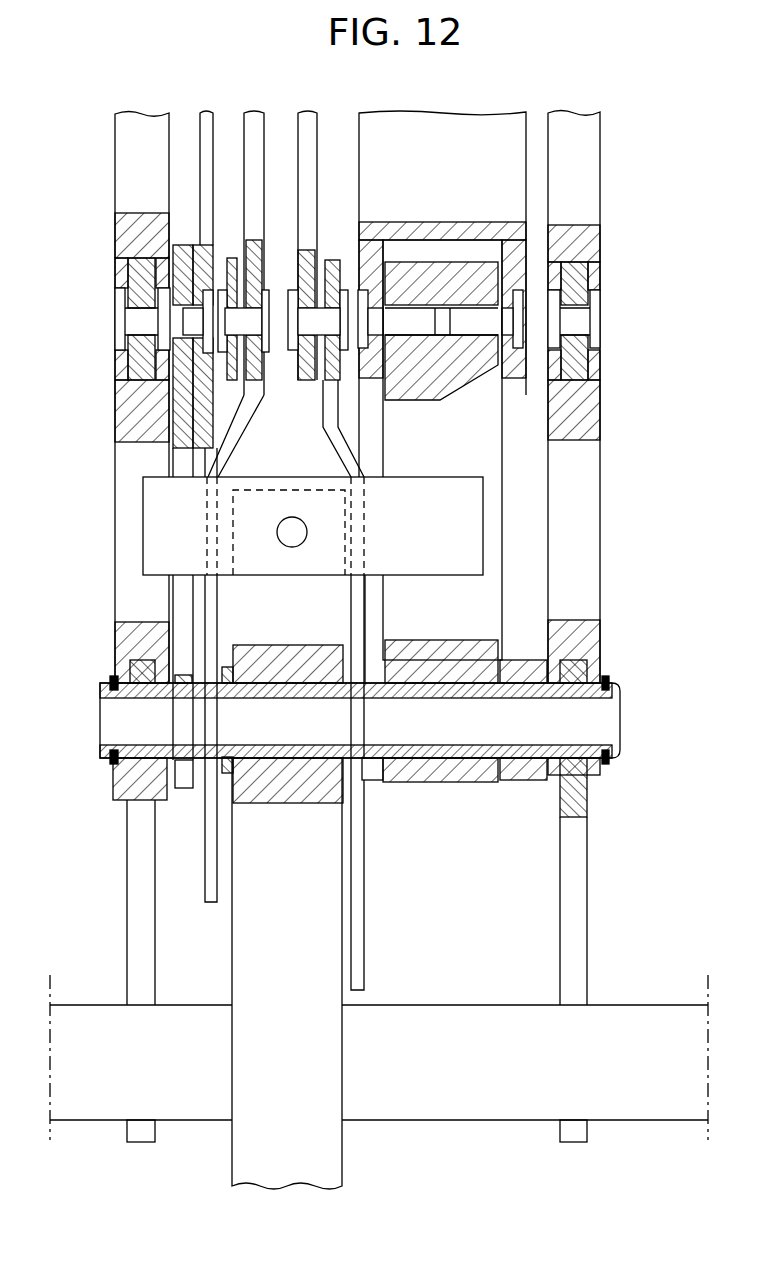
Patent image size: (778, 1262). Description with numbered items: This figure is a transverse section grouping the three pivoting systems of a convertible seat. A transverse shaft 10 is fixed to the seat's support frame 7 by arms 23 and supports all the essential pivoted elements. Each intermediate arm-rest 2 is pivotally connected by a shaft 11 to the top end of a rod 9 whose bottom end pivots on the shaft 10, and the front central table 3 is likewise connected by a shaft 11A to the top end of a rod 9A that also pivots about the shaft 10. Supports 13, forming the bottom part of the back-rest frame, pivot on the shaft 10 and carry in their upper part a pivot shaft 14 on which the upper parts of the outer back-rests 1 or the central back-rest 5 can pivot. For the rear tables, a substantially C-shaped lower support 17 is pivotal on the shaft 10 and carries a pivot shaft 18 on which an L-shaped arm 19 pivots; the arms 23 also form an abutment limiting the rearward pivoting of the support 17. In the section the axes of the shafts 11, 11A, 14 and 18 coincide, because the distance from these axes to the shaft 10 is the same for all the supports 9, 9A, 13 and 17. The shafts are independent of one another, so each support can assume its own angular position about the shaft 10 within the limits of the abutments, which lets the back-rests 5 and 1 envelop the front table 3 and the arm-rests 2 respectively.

The outer back-rest 1 is at (305, 125).
The intermediate retractable arm-rest 2 is at (473, 130).
The front central table 3 is at (212, 120).
The central back-rest 5 is at (254, 120).
The support frame 7 is at (437, 1047).
The rod 9 is at (472, 439).
The rod 9A is at (185, 443).
The transverse shaft 10 is at (612, 710).
The shaft 11 is at (523, 302).
The shaft 11A is at (185, 283).
The support 13 is at (327, 427).
The pivot shaft 14 is at (288, 340).
The lower support 17 is at (130, 583).
The pivot shaft 18 is at (125, 342).
The L-shaped arm 19 is at (147, 130).
The arm 23 is at (145, 884).